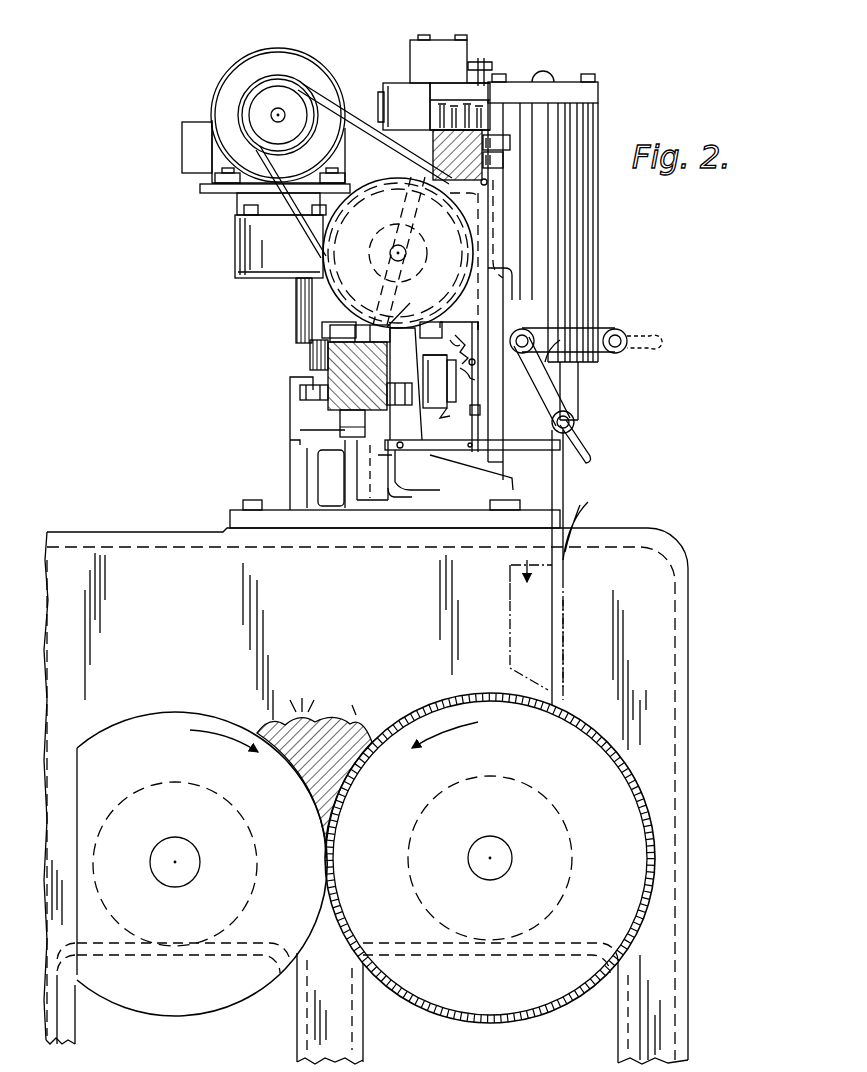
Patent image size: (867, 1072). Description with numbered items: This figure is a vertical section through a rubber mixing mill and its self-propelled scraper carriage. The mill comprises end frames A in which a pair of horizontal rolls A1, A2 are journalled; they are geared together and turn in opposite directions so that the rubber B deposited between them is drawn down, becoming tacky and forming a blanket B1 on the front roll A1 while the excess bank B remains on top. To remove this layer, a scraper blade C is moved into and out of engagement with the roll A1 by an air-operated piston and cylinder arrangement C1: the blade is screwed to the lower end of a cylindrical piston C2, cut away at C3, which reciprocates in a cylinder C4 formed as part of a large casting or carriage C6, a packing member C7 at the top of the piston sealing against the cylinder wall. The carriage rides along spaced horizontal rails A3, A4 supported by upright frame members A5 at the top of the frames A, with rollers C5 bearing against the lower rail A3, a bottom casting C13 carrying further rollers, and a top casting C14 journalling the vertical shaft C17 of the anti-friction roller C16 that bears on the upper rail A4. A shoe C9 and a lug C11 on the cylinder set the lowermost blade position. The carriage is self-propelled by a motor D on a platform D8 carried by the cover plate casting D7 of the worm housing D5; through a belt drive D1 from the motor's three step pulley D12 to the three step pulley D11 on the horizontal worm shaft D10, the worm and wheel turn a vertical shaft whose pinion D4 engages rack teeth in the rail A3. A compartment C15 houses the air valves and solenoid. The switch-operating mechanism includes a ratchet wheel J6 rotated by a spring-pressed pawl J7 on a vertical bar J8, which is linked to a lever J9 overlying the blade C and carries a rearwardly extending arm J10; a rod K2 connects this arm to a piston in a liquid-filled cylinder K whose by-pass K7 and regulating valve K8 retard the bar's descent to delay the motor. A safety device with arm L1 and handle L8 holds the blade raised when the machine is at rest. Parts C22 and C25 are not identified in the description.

The end frames A is at (366, 796).
The front roll A1 is at (490, 858).
The horizontal roll A2 is at (202, 864).
The lower horizontal rail A3 is at (340, 362).
The upper horizontal rail A4 is at (433, 152).
The upright frame members A5 is at (497, 246).
The rubber B is at (334, 720).
The blanket B1 is at (648, 780).
The scraper blade C is at (585, 506).
The air-operated piston and cylinder arrangement C1 is at (612, 258).
The cylindrical piston C2 is at (578, 380).
The cut-away portion C3 is at (563, 478).
The cylinder C4 is at (598, 196).
The rollers C5 is at (398, 385).
The carriage casting C6 is at (503, 290).
The packing member C7 is at (375, 316).
The shoe C9 is at (340, 430).
The lug C11 is at (302, 393).
The bottom casting C13 is at (505, 138).
The top casting C14 is at (395, 143).
The compartment C15 is at (503, 162).
The anti-friction roller C16 is at (440, 40).
The vertical shaft C17 is at (488, 66).
The bolts C22 is at (470, 114).
The box C25 is at (416, 83).
The motor D is at (322, 70).
The belt drive D1 is at (240, 97).
The motor three step pulley D12 is at (250, 110).
The pinion D4 is at (310, 350).
The housing D5 is at (237, 240).
The cover plate casting D7 is at (256, 209).
The platform D8 is at (200, 189).
The horizontal shaft D10 is at (398, 246).
The three step pulley D11 is at (342, 254).
The ratchet wheel J6 is at (460, 396).
The spring-pressed pawl J7 is at (462, 348).
The bar J8 is at (480, 428).
The lever J9 is at (520, 448).
The rearwardly extending arm J10 is at (460, 322).
The cylinder K is at (434, 355).
The rod K2 is at (435, 305).
The by-pass K7 is at (452, 398).
The regulating valve K8 is at (454, 420).
The arm L1 is at (612, 326).
The handle L8 is at (585, 446).